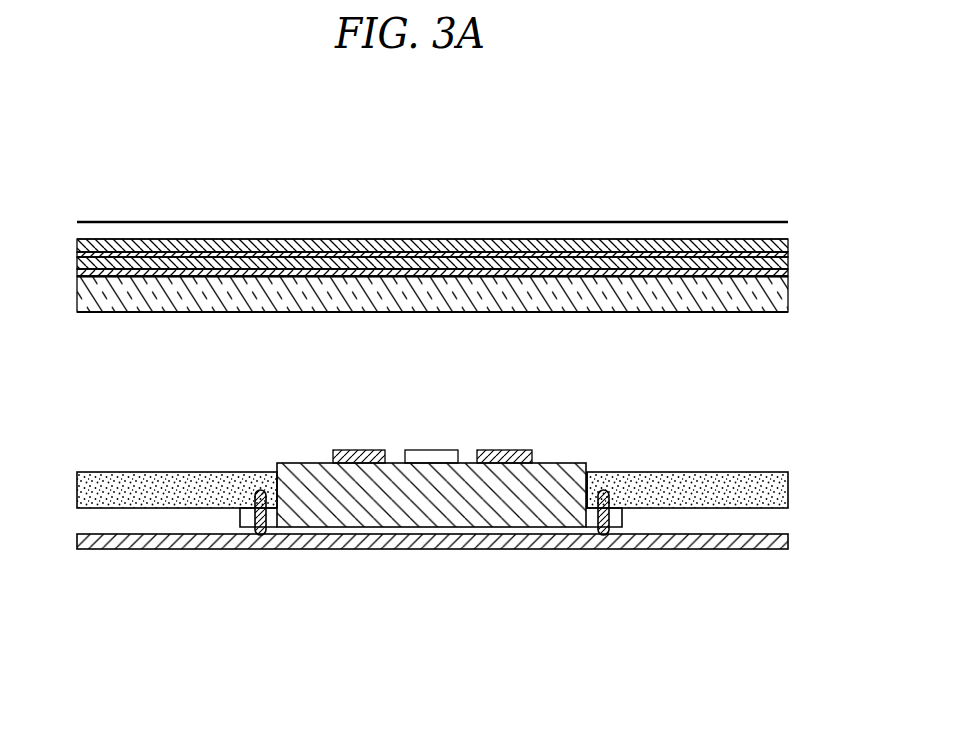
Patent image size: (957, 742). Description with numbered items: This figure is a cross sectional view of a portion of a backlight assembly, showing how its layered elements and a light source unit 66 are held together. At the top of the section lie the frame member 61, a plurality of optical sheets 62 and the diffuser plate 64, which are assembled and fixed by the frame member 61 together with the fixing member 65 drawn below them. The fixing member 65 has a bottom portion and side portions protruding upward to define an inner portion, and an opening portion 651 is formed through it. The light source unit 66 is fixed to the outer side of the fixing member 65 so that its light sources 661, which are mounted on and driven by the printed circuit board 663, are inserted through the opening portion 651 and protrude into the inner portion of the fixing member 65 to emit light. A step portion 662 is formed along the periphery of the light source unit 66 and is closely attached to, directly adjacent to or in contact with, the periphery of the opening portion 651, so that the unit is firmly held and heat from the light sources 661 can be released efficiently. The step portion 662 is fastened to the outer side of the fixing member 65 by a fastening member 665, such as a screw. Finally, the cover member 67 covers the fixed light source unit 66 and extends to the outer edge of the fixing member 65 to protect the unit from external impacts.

The frame member 61 is at (772, 233).
The optical sheets 62 is at (800, 239).
The diffuser plate 64 is at (772, 292).
The fixing member 65 is at (770, 489).
The opening portion 651 is at (590, 468).
The light source unit 66 is at (408, 492).
The light source 661 is at (500, 450).
The step portion 662 is at (268, 503).
The printed circuit board 663 is at (562, 462).
The fastening member 665 is at (603, 537).
The cover member 67 is at (770, 542).